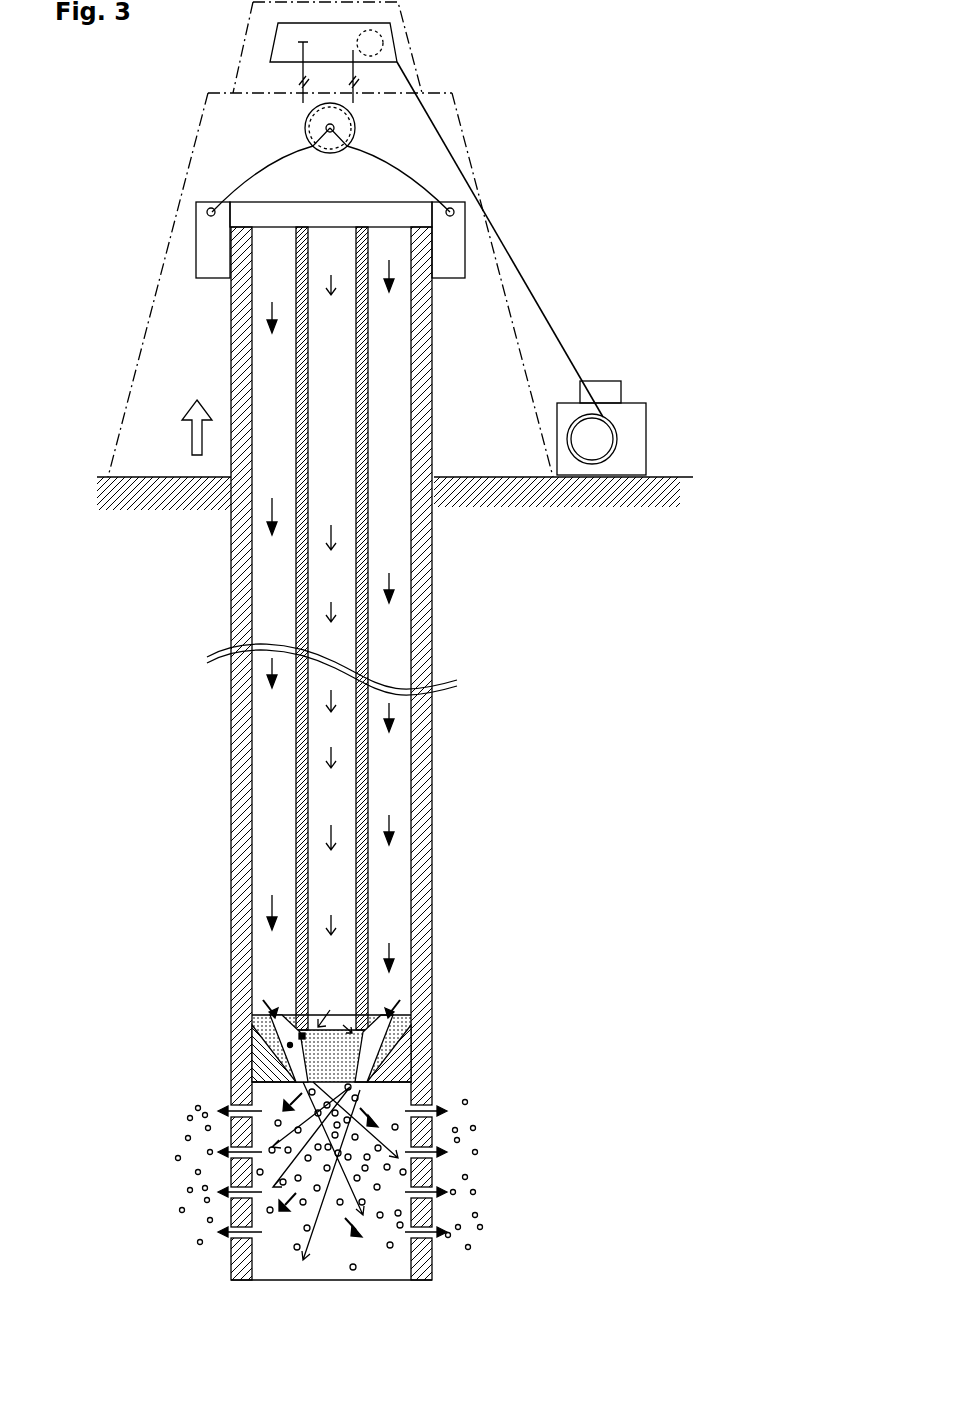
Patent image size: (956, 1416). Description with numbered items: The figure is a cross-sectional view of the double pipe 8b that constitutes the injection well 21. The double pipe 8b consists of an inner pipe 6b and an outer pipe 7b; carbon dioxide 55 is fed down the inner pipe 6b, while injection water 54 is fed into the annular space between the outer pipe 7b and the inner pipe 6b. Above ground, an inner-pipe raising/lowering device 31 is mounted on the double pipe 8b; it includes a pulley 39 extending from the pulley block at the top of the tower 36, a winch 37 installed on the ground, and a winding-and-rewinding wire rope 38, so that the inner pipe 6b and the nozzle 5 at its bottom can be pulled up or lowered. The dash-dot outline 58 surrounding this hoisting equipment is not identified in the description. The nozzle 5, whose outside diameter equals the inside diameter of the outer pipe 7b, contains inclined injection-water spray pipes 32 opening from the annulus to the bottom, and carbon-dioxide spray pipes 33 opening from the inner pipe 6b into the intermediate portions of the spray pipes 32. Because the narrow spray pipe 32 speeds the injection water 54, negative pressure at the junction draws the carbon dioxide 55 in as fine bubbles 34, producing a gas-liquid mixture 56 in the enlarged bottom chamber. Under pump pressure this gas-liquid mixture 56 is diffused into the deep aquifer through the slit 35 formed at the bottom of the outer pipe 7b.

The injection well 21 is at (308, 753).
The inner-pipe raising/lowering device 31 is at (196, 238).
The injection-water spray pipe 32 is at (290, 1045).
The carbon-dioxide spray pipe 33 is at (301, 1034).
The bubbles 34 is at (182, 1210).
The slit 35 is at (235, 1265).
The tower 36 is at (417, 52).
The winch 37 is at (647, 427).
The wire rope 38 is at (530, 288).
The pulley 39 is at (330, 148).
The nozzle 5 is at (381, 1015).
The injection water 54 is at (272, 510).
The carbon dioxide 55 is at (397, 548).
The gas-liquid mixture 56 is at (437, 1238).
The crane 58 is at (137, 477).
The inner pipe 6b is at (297, 733).
The outer pipe 7b is at (233, 810).
The double pipe 8b is at (240, 753).